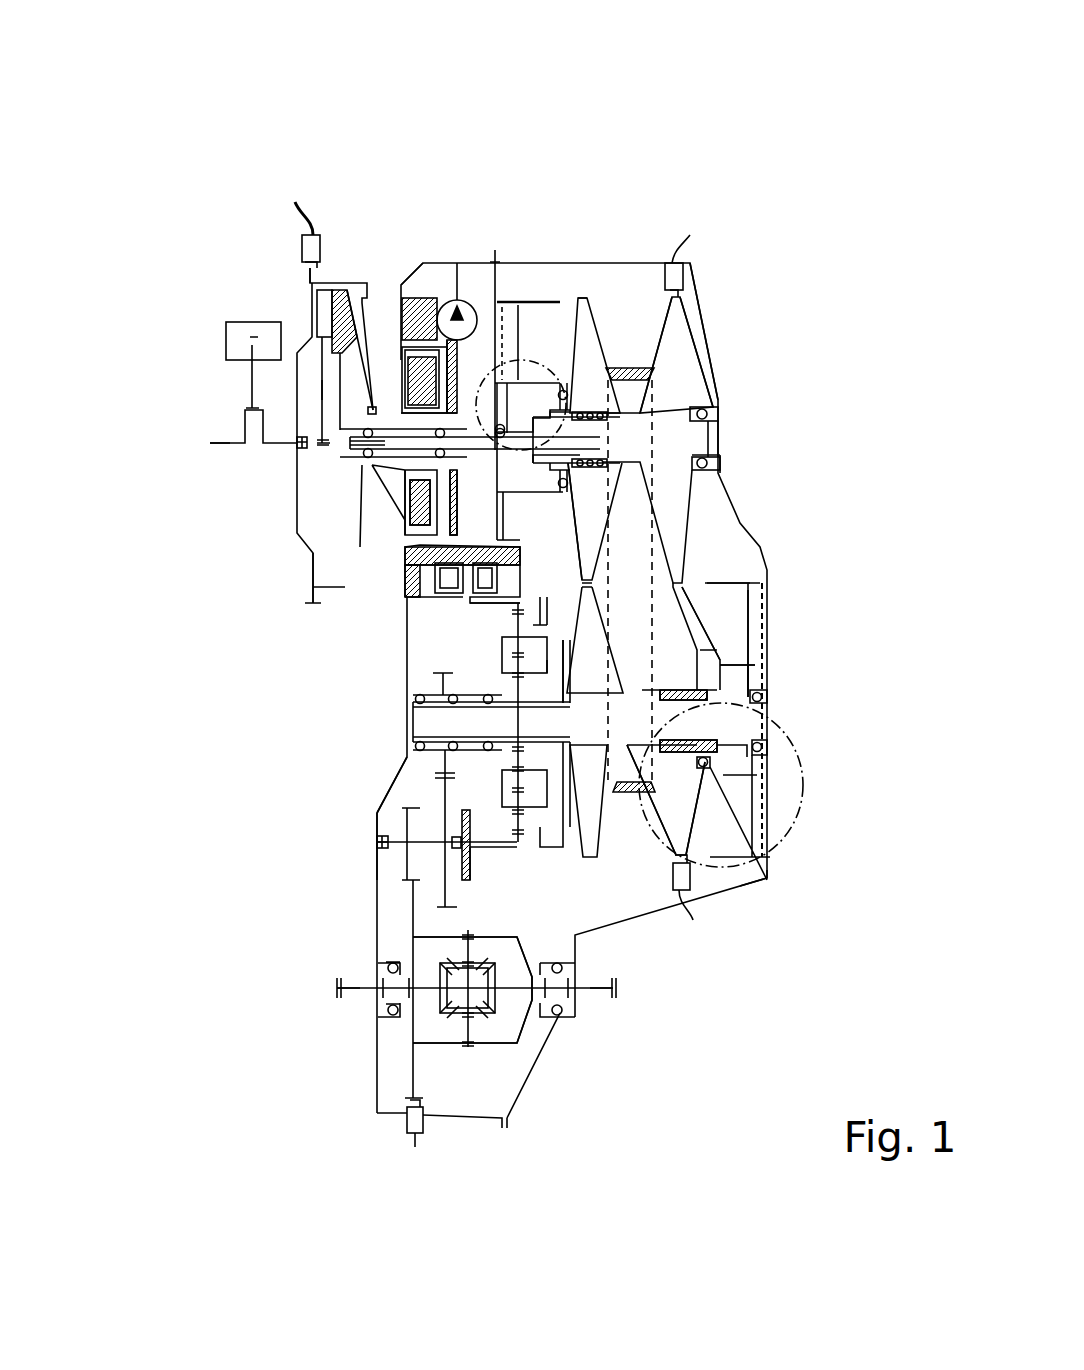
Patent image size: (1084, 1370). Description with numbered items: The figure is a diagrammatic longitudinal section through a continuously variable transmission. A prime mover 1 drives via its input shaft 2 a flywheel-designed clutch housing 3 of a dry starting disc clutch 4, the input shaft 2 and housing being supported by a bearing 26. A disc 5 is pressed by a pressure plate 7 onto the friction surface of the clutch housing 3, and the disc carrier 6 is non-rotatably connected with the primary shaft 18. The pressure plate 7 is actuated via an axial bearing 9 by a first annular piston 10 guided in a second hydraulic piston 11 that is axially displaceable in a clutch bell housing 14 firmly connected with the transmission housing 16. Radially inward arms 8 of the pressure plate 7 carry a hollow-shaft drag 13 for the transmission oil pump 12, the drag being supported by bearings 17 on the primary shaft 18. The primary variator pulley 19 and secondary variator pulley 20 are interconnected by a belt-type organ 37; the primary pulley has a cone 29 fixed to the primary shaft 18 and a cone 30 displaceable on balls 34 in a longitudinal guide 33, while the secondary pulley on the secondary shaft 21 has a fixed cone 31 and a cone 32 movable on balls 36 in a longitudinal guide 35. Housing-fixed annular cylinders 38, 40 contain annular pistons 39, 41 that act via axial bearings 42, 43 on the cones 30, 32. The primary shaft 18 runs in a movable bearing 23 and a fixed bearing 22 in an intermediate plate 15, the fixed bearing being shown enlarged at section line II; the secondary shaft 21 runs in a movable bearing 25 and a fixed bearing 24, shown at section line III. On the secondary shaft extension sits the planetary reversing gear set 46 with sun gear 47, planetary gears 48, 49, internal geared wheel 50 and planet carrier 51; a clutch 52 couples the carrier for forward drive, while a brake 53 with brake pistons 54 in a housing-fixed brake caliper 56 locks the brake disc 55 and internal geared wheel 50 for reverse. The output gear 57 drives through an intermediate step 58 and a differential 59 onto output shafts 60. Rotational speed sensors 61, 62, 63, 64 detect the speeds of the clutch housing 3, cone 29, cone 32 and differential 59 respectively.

The prime mover 1 is at (230, 330).
The input shaft 2 is at (215, 445).
The clutch housing 3 is at (313, 568).
The disc clutch 4 is at (361, 266).
The disc 5 is at (320, 302).
The disc carrier 6 is at (322, 387).
The pressure plate 7 is at (340, 285).
The arms 8 is at (375, 410).
The axial bearing 9 is at (375, 410).
The first annular piston 10 is at (440, 307).
The second hydraulic piston 11 is at (470, 305).
The transmission oil pump 12 is at (460, 335).
The drag 13 is at (322, 410).
The clutch bell housing 14 is at (425, 300).
The intermediate plate 15 is at (565, 300).
The transmission housing 16 is at (562, 303).
The bearings 17 is at (350, 440).
The primary shaft 18 is at (357, 450).
The primary variator pulley 19 is at (665, 393).
The secondary variator pulley 20 is at (712, 651).
The secondary shaft 21 is at (407, 808).
The fixed bearing 22 is at (568, 438).
The movable bearing 23 is at (707, 415).
The fixed bearing 24 is at (760, 745).
The movable bearing 25 is at (378, 843).
The bearing 26 is at (300, 445).
The cone 29 is at (673, 352).
The cone 30 is at (690, 262).
The cone 31 is at (687, 595).
The cone 32 is at (710, 780).
The longitudinal guide 33 is at (562, 487).
The balls 34 is at (605, 413).
The longitudinal guide 35 is at (712, 742).
The balls 36 is at (710, 758).
The belt-type organ 37 is at (627, 790).
The annular cylinder 38 is at (560, 307).
The annular piston 39 is at (590, 298).
The annular cylinder 40 is at (745, 581).
The annular piston 41 is at (750, 615).
The axial bearing 42 is at (690, 318).
The axial bearing 43 is at (767, 875).
The reversing gear set 46 is at (413, 702).
The sun gear 47 is at (417, 748).
The planetary gear 48 is at (415, 745).
The planetary gear 49 is at (466, 658).
The internal geared wheel 50 is at (562, 603).
The planet carrier 51 is at (533, 677).
The clutch 52 is at (547, 605).
The brake 53 is at (470, 522).
The brake pistons 54 is at (443, 576).
The brake disc 55 is at (405, 573).
The brake caliper 56 is at (407, 587).
The output gear 57 is at (440, 675).
The intermediate step 58 is at (377, 870).
The differential 59 is at (388, 948).
The output shafts 60 is at (362, 993).
The rotational speed sensor 61 is at (303, 247).
The rotational speed sensor 62 is at (683, 265).
The rotational speed sensor 63 is at (680, 830).
The rotational speed sensor 64 is at (410, 1123).
The section line II is at (563, 343).
The section line III is at (785, 837).